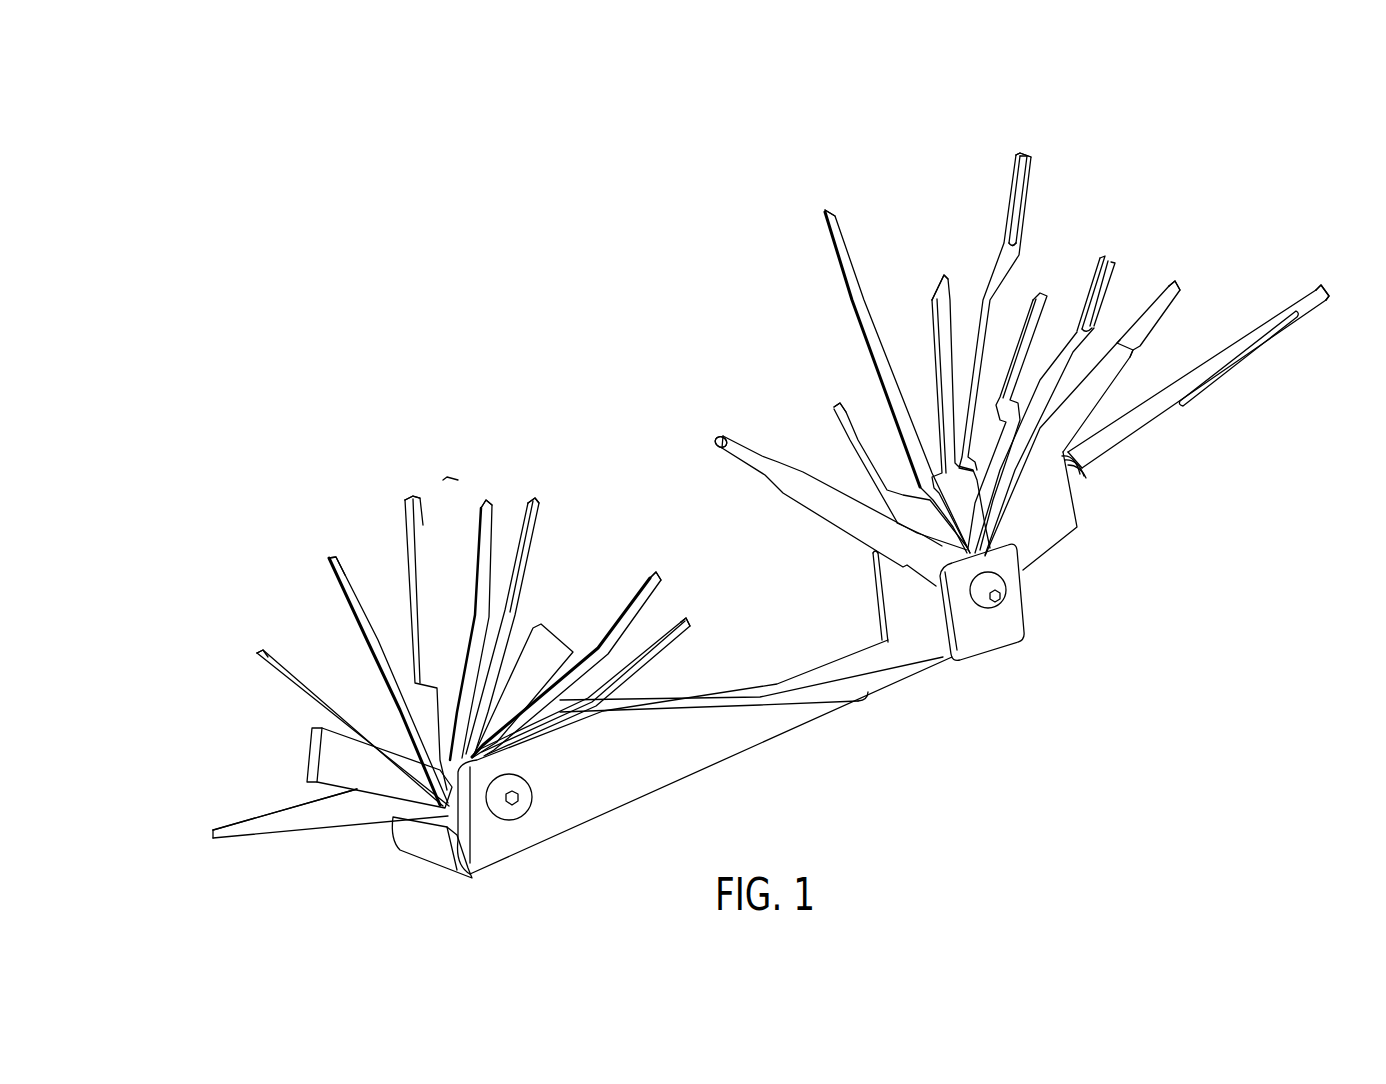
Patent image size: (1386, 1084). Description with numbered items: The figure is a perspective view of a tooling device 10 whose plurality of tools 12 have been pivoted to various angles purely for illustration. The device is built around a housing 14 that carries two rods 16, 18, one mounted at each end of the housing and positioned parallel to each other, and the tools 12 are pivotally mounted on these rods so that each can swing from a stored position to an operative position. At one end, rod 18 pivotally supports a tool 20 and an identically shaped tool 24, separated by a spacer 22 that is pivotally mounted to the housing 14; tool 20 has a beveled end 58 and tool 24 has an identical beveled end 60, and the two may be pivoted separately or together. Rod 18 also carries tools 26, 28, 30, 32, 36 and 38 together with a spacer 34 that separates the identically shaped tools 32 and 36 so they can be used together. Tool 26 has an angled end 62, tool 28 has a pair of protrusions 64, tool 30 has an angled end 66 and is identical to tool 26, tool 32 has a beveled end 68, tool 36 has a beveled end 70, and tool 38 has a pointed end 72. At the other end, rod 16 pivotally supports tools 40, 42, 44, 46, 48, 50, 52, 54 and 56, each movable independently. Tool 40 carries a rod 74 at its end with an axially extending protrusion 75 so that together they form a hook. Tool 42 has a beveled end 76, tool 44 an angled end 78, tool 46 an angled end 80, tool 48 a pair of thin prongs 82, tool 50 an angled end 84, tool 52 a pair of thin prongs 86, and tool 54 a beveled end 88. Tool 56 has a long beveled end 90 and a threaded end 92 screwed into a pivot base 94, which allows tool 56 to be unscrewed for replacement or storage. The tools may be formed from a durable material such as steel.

The tooling device 10 is at (987, 696).
The tools 12 is at (1210, 165).
The housing 14 is at (593, 785).
The rod 16 is at (1007, 585).
The rod 18 is at (498, 813).
The tool 20 is at (232, 833).
The spacer 22 is at (313, 748).
The tool 24 is at (280, 665).
The tool 26 is at (340, 583).
The tool 28 is at (427, 542).
The tool 30 is at (487, 518).
The tool 32 is at (528, 535).
The spacer 34 is at (553, 647).
The tool 36 is at (640, 605).
The tool 38 is at (653, 652).
The tool 40 is at (807, 503).
The tool 42 is at (852, 437).
The tool 44 is at (840, 252).
The tool 46 is at (947, 310).
The tool 48 is at (1012, 255).
The tool 50 is at (1048, 312).
The tool 52 is at (1128, 320).
The tool 54 is at (1113, 373).
The tool 56 is at (1140, 427).
The beveled end 58 is at (212, 835).
The beveled end 60 is at (250, 645).
The angled end 62 is at (330, 562).
The protrusions 64 is at (418, 498).
The angled end 66 is at (486, 506).
The beveled end 68 is at (533, 497).
The beveled end 70 is at (657, 573).
The pointed end 72 is at (687, 623).
The rod 74 is at (723, 447).
The protrusion 75 is at (715, 440).
The beveled end 76 is at (833, 407).
The angled end 78 is at (825, 230).
The angled end 80 is at (940, 287).
The thin prongs 82 is at (1025, 152).
The angled end 84 is at (1017, 257).
The thin prongs 86 is at (1080, 340).
The beveled end 88 is at (1173, 283).
The long beveled end 90 is at (1323, 293).
The threaded end 92 is at (1082, 480).
The pivot base 94 is at (1063, 533).